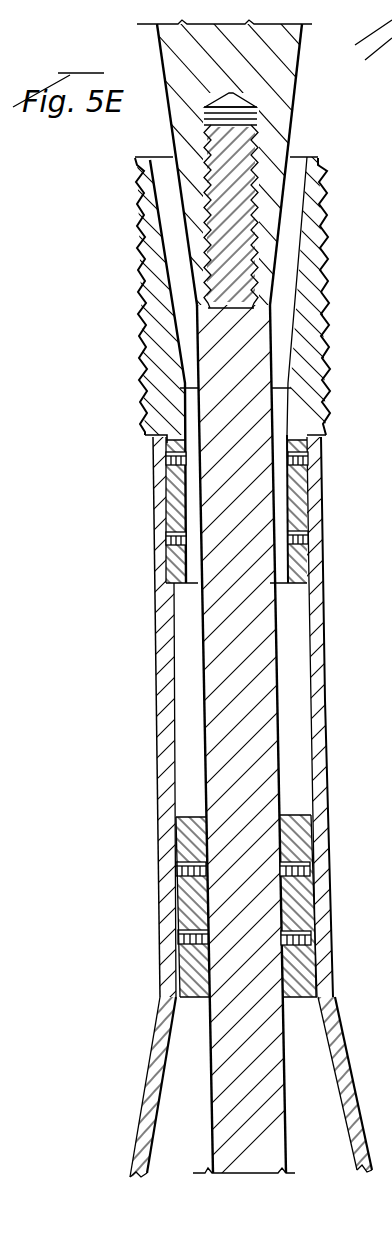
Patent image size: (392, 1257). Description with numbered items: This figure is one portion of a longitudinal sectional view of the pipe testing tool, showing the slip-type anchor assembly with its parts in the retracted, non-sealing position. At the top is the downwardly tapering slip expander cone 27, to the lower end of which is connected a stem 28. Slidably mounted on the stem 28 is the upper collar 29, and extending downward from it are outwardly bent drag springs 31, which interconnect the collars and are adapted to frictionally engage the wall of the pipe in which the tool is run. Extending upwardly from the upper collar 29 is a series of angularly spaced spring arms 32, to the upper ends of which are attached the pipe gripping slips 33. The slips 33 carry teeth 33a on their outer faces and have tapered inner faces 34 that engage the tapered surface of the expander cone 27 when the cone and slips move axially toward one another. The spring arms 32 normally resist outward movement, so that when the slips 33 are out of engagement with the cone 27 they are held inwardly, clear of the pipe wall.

The slip expander cone 27 is at (292, 105).
The stem 28 is at (256, 412).
The upper collar 29 is at (300, 903).
The drag springs 31 is at (148, 1095).
The spring arms 32 is at (172, 732).
The pipe gripping slips 33 is at (142, 318).
The teeth 33a is at (333, 350).
The tapered inner faces 34 is at (172, 243).